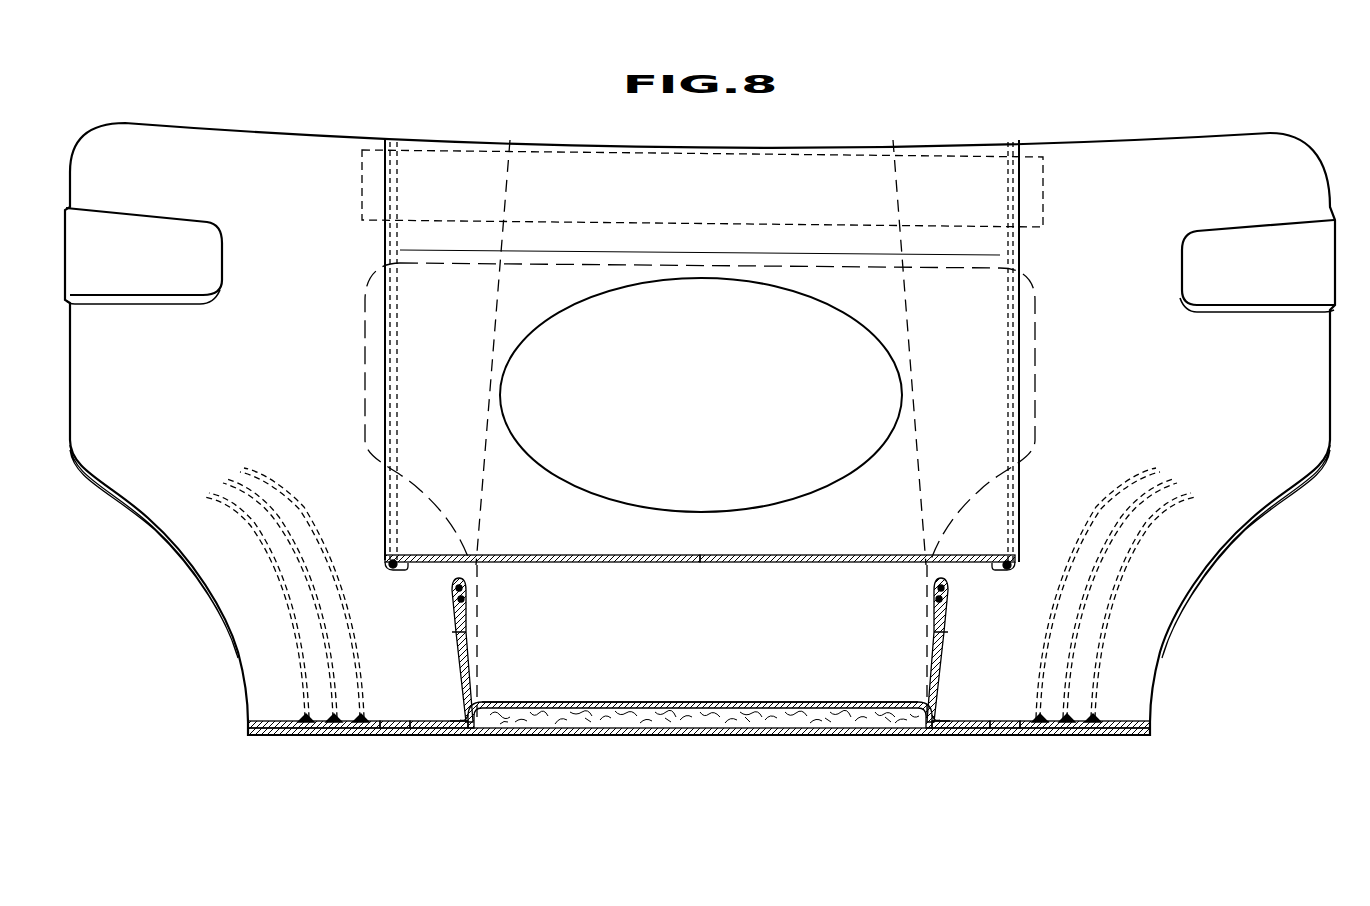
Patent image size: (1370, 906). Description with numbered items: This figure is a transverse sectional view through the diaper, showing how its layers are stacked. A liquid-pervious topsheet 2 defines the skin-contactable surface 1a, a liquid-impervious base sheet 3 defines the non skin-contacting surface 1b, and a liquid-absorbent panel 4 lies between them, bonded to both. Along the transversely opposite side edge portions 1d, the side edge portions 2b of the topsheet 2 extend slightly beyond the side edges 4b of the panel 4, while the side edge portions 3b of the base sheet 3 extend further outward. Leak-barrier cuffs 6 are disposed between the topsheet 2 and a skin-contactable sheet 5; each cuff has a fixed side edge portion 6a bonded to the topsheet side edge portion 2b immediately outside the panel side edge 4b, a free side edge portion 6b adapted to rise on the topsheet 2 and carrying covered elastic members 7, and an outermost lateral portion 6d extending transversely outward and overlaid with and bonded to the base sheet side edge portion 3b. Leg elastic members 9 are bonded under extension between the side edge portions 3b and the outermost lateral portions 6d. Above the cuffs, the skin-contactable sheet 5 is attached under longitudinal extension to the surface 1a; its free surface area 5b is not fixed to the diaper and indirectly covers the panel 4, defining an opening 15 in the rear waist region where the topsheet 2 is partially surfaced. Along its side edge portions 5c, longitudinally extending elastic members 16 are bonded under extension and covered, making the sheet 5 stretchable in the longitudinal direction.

The skin-contactable surface 1a is at (640, 702).
The non skin-contacting surface 1b is at (688, 731).
The transversely opposite side edge portions 1d is at (250, 736).
The topsheet 2 is at (722, 704).
The side edge portions of the topsheet 2b is at (432, 736).
The base sheet 3 is at (828, 736).
The side edge portions of the base sheet 3b is at (388, 736).
The liquid-absorbent panel 4 is at (747, 728).
The transversely opposite side edges of the panel 4b is at (478, 736).
The skin-contactable sheet 5 is at (535, 555).
The free surface area 5b is at (680, 557).
The side edge portions of the skin-contactable sheet 5c is at (437, 556).
The leak-barrier cuffs 6 is at (458, 656).
The fixed side edge portions 6a is at (462, 718).
The free side edge portions 6b is at (452, 605).
The outermost lateral portions 6d is at (292, 720).
The elastic members 7 is at (470, 582).
The elastic members 9 is at (360, 731).
The opening 15 is at (825, 328).
The elastic members 16 is at (388, 560).